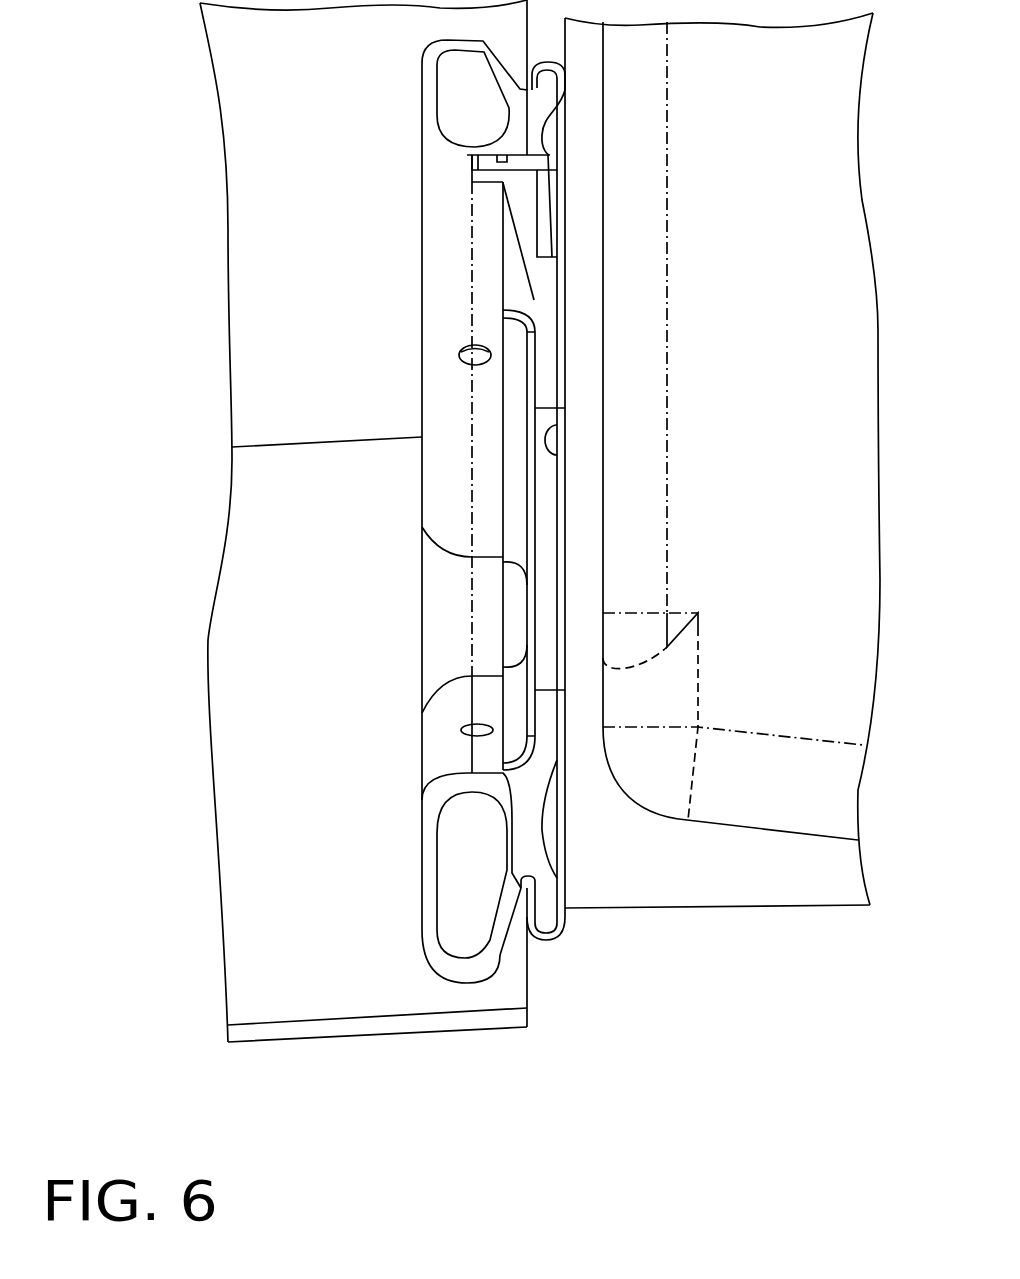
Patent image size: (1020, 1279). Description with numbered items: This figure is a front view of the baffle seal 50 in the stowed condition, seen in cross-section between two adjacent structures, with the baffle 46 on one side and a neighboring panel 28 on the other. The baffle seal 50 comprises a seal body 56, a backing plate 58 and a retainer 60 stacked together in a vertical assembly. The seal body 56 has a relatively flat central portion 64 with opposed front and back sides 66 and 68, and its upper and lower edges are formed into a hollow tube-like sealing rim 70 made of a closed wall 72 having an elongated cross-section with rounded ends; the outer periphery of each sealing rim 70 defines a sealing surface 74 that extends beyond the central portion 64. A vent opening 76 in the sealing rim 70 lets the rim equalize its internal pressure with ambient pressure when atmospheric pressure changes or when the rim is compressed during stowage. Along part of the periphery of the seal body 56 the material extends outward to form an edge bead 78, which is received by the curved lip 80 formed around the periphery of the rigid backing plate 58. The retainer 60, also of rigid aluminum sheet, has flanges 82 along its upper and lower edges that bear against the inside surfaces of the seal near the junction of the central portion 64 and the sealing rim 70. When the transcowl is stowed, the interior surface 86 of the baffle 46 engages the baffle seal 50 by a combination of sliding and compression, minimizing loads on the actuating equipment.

The second panel 28 is at (806, 454).
The baffle 46 is at (200, 1058).
The baffle seal 50 is at (390, 188).
The seal body 56 is at (510, 205).
The backing plate 58 is at (565, 572).
The retainer 60 is at (527, 507).
The central portion 64 is at (547, 372).
The front side 66 is at (522, 272).
The back side 68 is at (557, 452).
The sealing rim 70 is at (425, 825).
The closed wall 72 is at (432, 893).
The sealing surface 74 is at (466, 985).
The vent opening 76 is at (473, 346).
The edge bead 78 is at (530, 950).
The curved lip 80 is at (545, 907).
The flanges 82 is at (505, 746).
The interior surface 86 is at (326, 584).